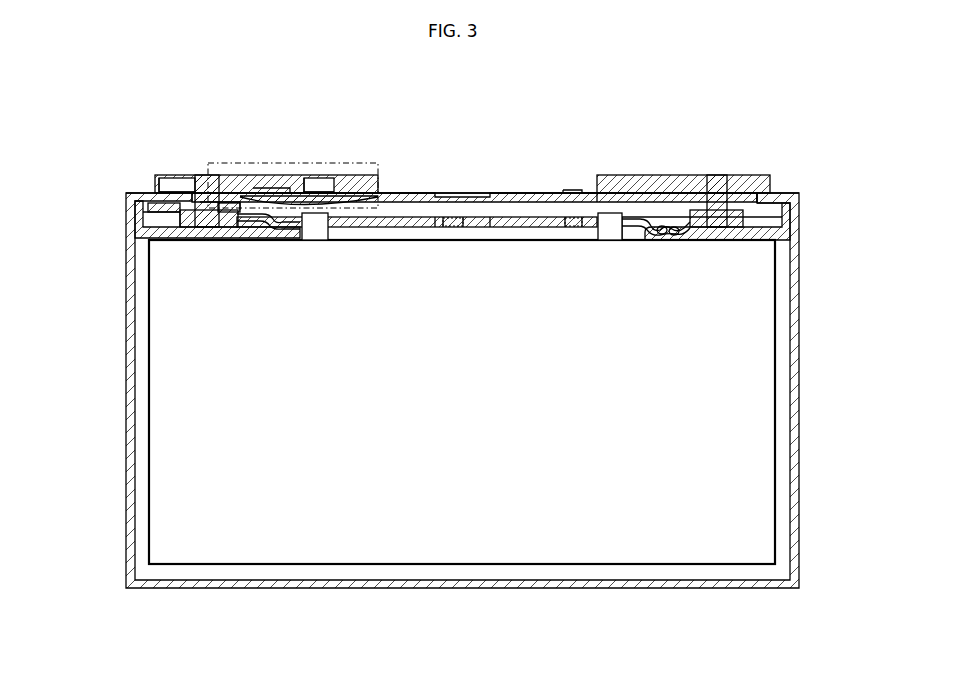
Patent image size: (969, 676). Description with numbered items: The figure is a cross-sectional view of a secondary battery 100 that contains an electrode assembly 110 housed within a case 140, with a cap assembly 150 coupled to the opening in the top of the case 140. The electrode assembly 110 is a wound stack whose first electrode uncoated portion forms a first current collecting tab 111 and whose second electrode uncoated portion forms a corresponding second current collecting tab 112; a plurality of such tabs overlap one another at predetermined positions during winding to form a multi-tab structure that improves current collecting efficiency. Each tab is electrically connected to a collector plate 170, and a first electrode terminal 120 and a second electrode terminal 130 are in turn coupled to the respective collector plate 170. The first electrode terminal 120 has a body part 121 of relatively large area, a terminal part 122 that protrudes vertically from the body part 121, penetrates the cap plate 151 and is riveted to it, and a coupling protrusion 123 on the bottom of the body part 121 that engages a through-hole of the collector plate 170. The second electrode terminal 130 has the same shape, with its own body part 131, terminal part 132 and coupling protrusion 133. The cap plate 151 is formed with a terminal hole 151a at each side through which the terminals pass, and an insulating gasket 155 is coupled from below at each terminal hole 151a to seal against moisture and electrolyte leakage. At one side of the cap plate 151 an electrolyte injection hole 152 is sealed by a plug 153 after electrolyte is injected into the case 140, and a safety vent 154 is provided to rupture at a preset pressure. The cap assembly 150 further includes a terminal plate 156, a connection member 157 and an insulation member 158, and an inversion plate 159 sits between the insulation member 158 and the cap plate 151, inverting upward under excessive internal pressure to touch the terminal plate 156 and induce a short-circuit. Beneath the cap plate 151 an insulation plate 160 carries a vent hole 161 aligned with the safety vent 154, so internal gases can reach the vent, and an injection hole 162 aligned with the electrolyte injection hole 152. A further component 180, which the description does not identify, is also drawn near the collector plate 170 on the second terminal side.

The secondary battery 100 is at (62, 105).
The electrode assembly 110 is at (493, 570).
The first current collecting tab 111 is at (314, 234).
The second current collecting tab 112 is at (610, 234).
The first electrode terminal 120 is at (160, 246).
The body part 121 is at (186, 216).
The terminal part 122 is at (206, 240).
The coupling protrusion 123 is at (192, 232).
The second electrode terminal 130 is at (762, 247).
The body part 131 is at (766, 217).
The terminal part 132 is at (710, 243).
The coupling protrusion 133 is at (716, 236).
The case 140 is at (800, 388).
The cap assembly 150 is at (534, 188).
The cap plate 151 is at (402, 192).
The terminal hole 151a is at (210, 240).
The electrolyte injection hole 152 is at (568, 232).
The plug 153 is at (570, 200).
The safety vent 154 is at (457, 216).
The gasket 155 is at (197, 189).
The terminal plate 156 is at (262, 174).
The connection member 157 is at (775, 192).
The insulation member 158 is at (158, 177).
The inversion plate 159 is at (304, 190).
The insulation plate 160 is at (426, 208).
The vent hole 161 is at (465, 215).
The injection hole 162 is at (577, 230).
The collector plate 170 is at (630, 212).
The connection member 180 is at (687, 212).